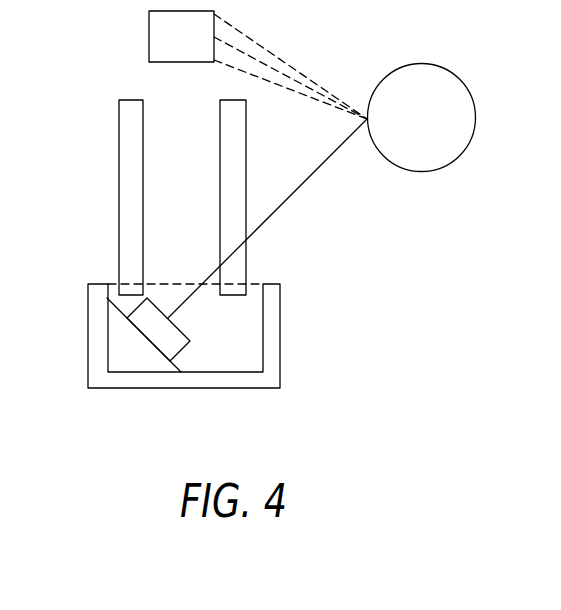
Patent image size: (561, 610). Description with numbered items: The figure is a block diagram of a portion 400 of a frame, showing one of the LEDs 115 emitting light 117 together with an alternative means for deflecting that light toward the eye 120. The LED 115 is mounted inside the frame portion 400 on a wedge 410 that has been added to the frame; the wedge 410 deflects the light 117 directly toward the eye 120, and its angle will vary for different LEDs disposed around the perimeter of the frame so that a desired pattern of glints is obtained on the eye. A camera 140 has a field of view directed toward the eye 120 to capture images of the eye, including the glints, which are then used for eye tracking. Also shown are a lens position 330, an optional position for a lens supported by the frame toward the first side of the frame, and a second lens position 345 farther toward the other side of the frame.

The camera 140 is at (149, 33).
The eye 120 is at (421, 63).
The lens position 330 is at (119, 128).
The second panel 345 is at (220, 130).
The portion of frame 400 is at (88, 300).
The wedge 410 is at (178, 365).
The LED 115 is at (189, 338).
The light 117 is at (268, 218).